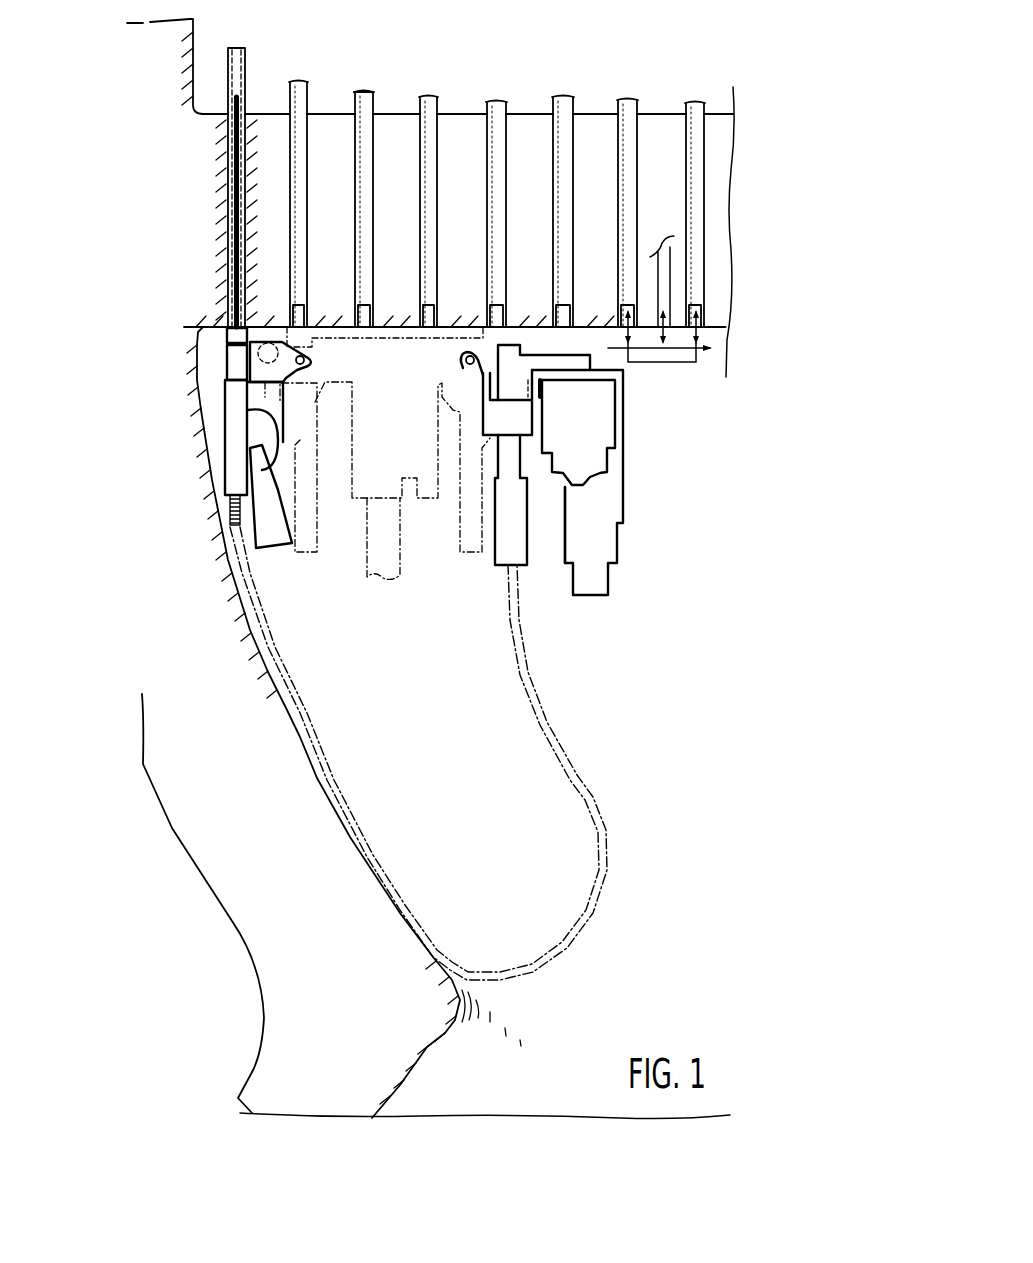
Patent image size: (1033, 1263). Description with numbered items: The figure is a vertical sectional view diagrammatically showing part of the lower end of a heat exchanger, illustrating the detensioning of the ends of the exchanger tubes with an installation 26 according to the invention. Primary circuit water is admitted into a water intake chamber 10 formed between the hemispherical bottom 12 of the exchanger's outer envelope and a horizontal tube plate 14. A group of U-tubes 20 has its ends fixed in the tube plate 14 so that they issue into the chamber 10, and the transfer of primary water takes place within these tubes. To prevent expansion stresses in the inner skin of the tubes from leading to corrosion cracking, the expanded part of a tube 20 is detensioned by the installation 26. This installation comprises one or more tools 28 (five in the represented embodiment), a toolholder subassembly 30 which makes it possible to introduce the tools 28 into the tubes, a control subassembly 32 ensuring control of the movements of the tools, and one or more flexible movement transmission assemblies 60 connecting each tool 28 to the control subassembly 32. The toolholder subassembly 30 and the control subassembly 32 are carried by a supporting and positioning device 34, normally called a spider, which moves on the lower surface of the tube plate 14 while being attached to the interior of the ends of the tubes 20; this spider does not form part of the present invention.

The water intake chamber 10 is at (708, 716).
The hemispherical bottom 12 is at (262, 934).
The tube plate 14 is at (473, 118).
The U-tubes 20 is at (355, 92).
The installation 26 is at (657, 598).
The tool 28 is at (225, 197).
The toolholder subassembly 30 is at (225, 397).
The control subassembly 32 is at (628, 438).
The supporting and positioning device 34 is at (420, 504).
The flexible movement transmission assembly 60 is at (594, 806).